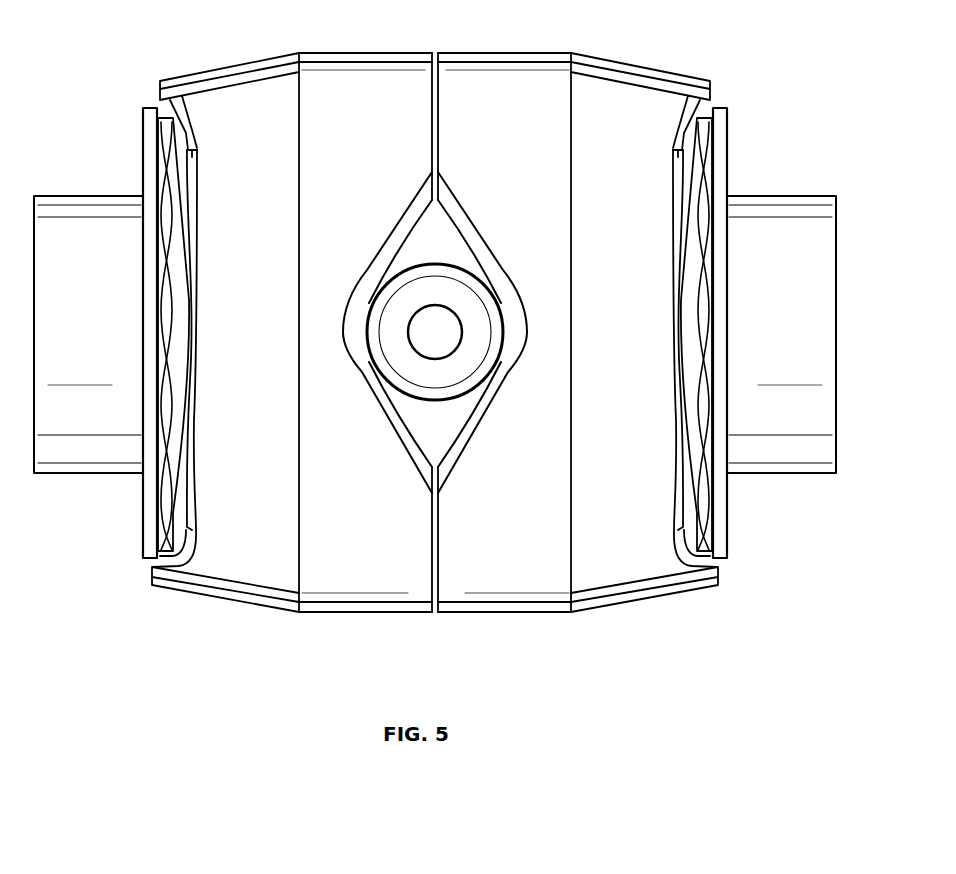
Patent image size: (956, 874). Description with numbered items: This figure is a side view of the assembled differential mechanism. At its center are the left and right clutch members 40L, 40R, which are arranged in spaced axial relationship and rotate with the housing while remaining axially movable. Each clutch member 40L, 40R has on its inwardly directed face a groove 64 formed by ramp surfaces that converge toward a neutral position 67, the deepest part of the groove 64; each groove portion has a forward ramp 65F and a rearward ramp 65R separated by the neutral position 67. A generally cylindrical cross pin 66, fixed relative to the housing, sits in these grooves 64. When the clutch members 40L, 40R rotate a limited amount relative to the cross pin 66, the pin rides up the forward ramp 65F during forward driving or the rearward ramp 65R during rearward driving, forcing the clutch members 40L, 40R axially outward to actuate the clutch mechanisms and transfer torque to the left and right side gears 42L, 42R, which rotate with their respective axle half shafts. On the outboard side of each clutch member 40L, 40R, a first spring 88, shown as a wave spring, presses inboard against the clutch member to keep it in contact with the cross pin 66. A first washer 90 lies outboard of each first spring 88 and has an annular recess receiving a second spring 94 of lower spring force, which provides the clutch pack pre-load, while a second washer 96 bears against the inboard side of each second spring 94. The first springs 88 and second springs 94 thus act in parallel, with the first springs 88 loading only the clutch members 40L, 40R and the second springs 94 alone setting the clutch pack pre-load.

The left clutch member 40L is at (272, 62).
The right clutch member 40R is at (598, 62).
The left side gear 42L is at (97, 455).
The right side gear 42R is at (773, 455).
The groove 64 is at (368, 302).
The forward ramp 65F is at (400, 243).
The rearward ramp 65R is at (403, 425).
The cross pin 66 is at (393, 350).
The neutral position 67 is at (367, 333).
The first spring 88 is at (170, 173).
The first washer 90 is at (143, 120).
The second spring 94 is at (160, 243).
The second washer 96 is at (180, 110).